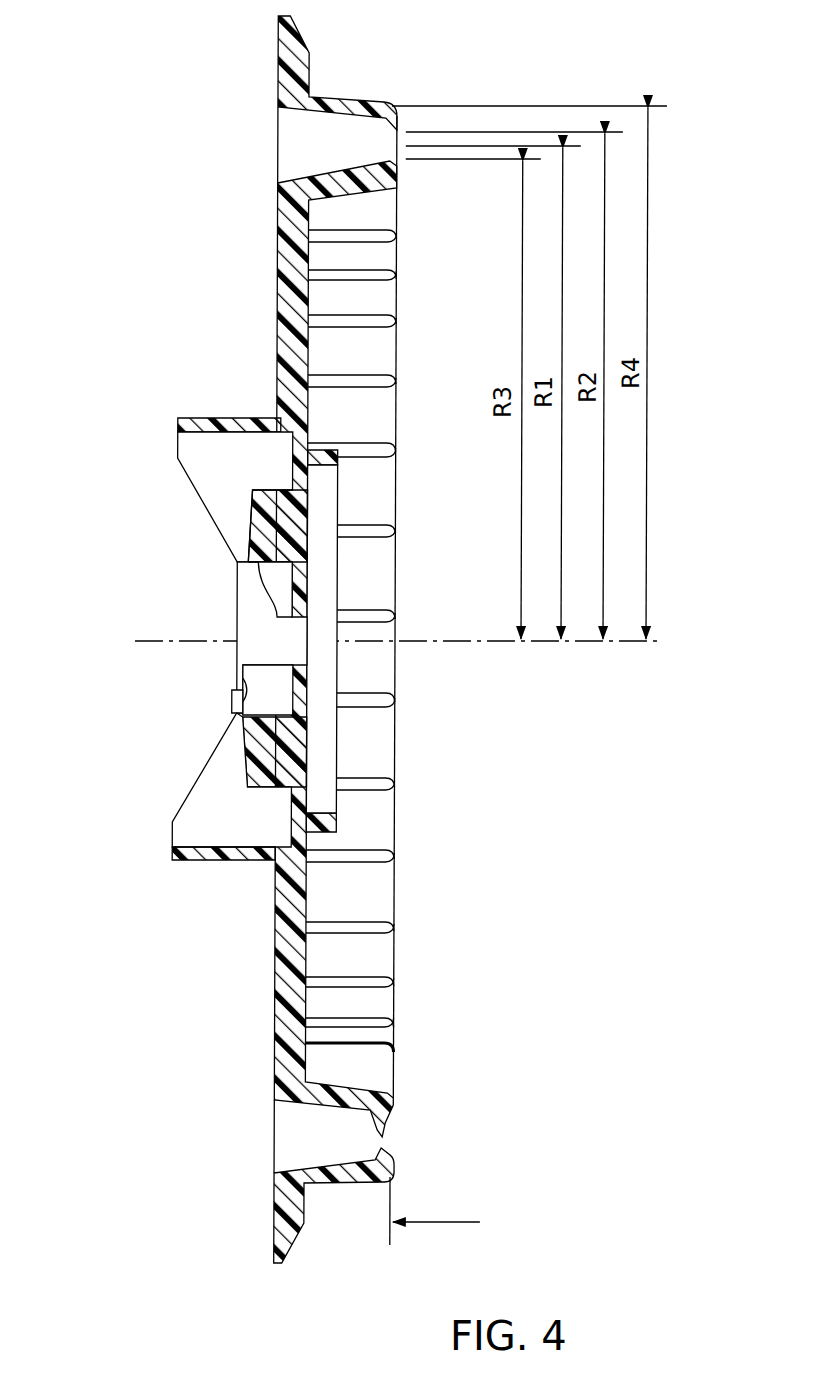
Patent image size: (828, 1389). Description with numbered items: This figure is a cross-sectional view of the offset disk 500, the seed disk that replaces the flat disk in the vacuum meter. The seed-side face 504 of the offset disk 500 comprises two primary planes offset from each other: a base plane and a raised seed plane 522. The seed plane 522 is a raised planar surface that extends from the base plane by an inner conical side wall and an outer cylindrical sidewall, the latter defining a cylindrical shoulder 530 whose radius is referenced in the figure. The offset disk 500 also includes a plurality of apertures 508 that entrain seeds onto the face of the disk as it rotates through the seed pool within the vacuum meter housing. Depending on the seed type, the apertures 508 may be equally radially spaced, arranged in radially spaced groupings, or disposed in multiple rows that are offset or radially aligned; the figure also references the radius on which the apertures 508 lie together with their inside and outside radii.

The offset disk 500 is at (367, 639).
The seed-side face 504 is at (397, 818).
The apertures 508 is at (388, 143).
The seed plane 522 is at (448, 1211).
The cylindrical shoulder 530 is at (350, 98).